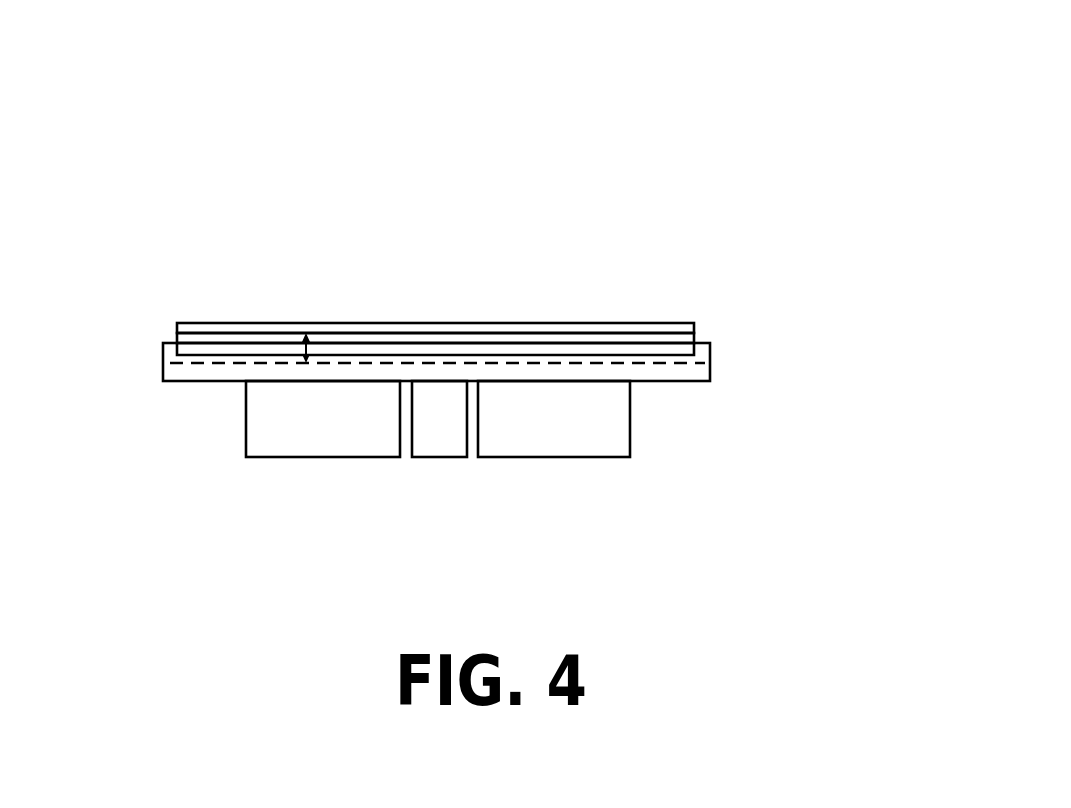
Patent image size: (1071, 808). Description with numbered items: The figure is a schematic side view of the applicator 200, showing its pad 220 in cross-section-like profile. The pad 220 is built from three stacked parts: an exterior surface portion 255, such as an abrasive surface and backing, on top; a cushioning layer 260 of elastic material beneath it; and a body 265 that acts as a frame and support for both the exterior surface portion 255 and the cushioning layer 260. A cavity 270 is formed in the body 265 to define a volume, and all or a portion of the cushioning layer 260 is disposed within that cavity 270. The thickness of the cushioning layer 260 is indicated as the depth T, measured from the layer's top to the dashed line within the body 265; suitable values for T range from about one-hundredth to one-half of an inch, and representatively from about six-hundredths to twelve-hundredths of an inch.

The applicator 200 is at (606, 121).
The pad 220 is at (125, 320).
The exterior surface portion 255 is at (654, 323).
The cushioning layer 260 is at (696, 337).
The body 265 is at (712, 359).
The cavity 270 is at (173, 340).
The depth T is at (302, 338).